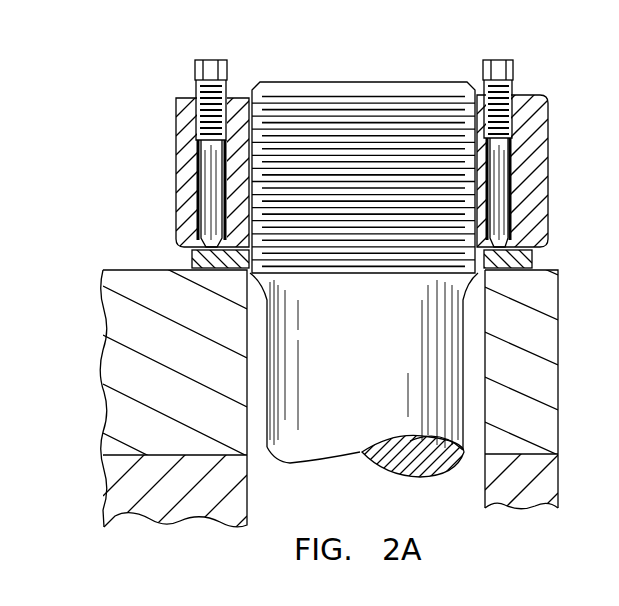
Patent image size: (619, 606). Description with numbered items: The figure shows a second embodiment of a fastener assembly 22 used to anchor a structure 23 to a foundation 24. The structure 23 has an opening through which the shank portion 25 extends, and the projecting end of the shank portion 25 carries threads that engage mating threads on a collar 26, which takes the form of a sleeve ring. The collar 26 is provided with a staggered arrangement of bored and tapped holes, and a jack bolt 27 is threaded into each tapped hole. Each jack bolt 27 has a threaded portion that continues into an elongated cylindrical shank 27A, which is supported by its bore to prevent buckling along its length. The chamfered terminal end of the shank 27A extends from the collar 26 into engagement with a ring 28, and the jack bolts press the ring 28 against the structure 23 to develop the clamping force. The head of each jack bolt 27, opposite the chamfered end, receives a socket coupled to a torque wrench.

The fastener assembly 22 is at (392, 81).
The structure 23 is at (140, 269).
The foundation 24 is at (108, 497).
The shank portion 25 is at (370, 396).
The collar 26 is at (548, 163).
The jack bolt 27 is at (211, 60).
The cylindrical shank 27A is at (508, 193).
The ring 28 is at (533, 260).